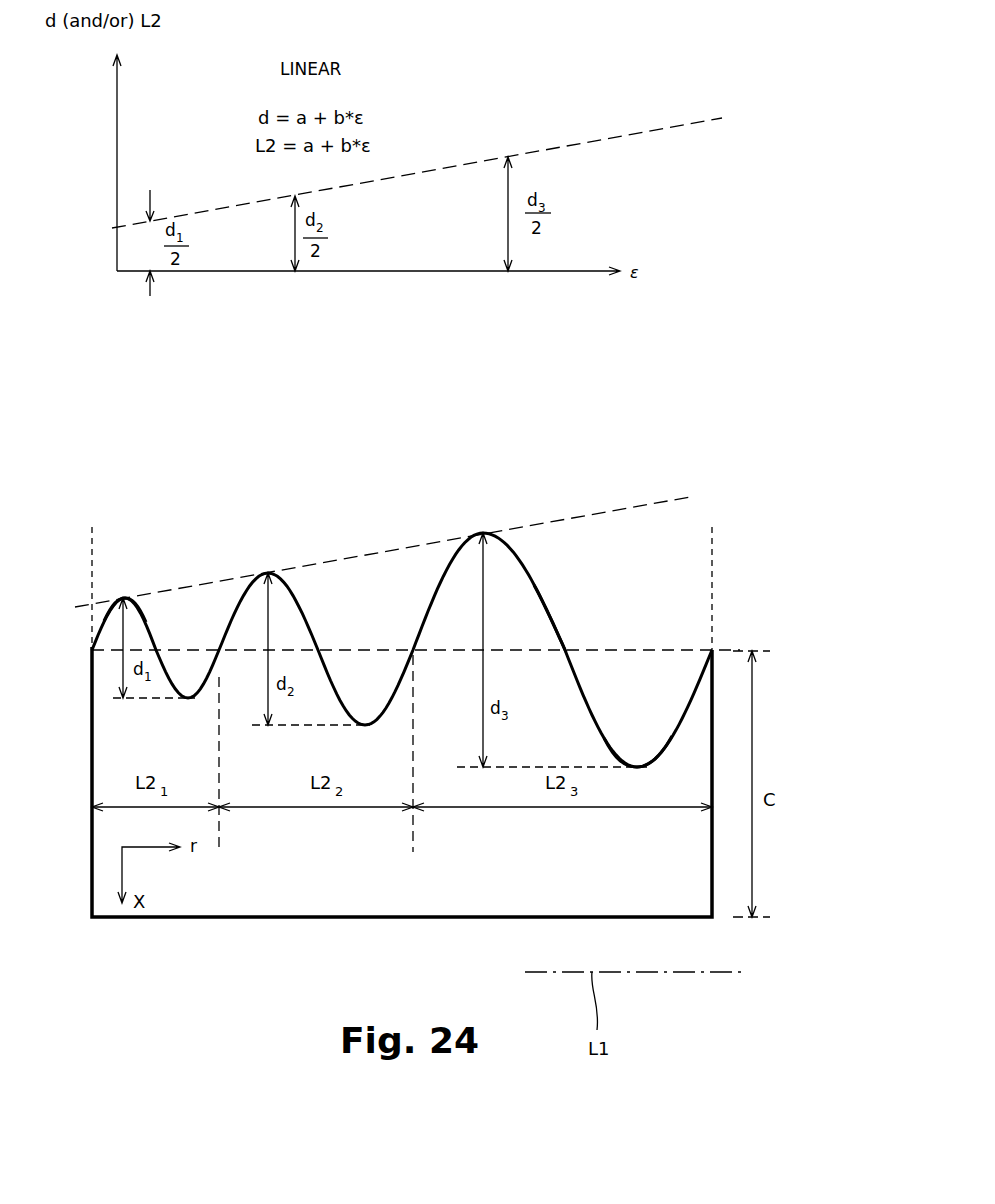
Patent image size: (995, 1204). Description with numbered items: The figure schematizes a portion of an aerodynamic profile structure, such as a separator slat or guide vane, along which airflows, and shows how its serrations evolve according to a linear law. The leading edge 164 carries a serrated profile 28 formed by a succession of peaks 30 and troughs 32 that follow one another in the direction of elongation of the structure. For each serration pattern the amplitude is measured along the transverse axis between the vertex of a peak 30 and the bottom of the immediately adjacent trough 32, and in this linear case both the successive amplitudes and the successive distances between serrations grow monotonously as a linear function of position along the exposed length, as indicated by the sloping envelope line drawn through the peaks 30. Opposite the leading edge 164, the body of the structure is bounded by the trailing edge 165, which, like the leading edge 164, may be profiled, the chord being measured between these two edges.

The profile 28 is at (320, 632).
The peak 30 is at (143, 620).
The trough 32 is at (638, 743).
The leading edge 164 is at (568, 627).
The trailing edge 165 is at (207, 920).